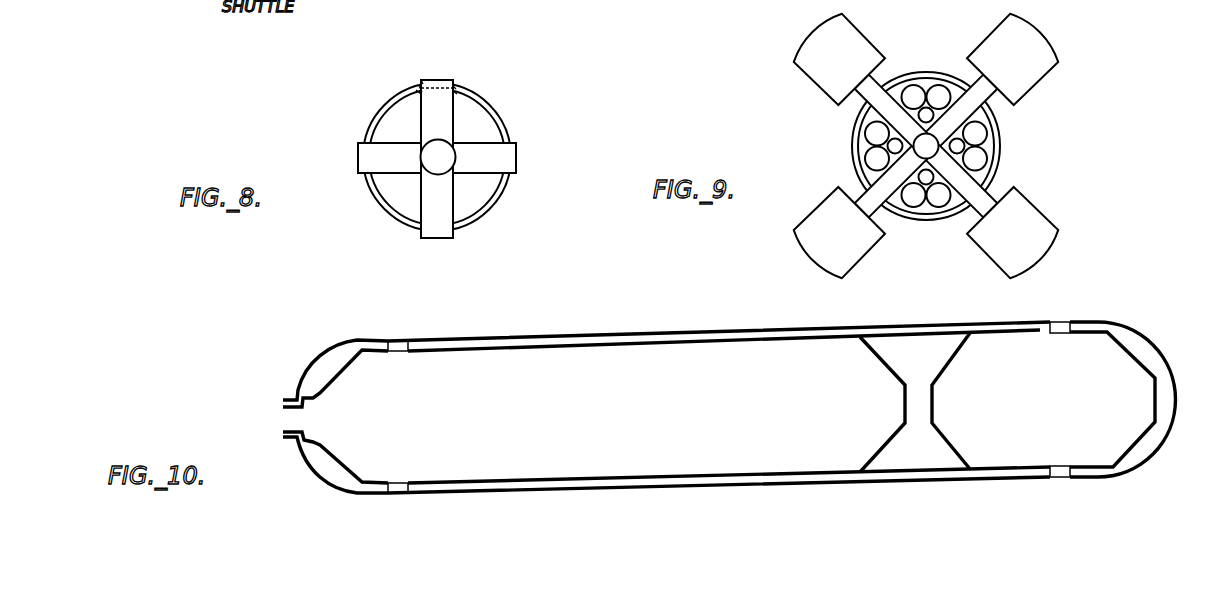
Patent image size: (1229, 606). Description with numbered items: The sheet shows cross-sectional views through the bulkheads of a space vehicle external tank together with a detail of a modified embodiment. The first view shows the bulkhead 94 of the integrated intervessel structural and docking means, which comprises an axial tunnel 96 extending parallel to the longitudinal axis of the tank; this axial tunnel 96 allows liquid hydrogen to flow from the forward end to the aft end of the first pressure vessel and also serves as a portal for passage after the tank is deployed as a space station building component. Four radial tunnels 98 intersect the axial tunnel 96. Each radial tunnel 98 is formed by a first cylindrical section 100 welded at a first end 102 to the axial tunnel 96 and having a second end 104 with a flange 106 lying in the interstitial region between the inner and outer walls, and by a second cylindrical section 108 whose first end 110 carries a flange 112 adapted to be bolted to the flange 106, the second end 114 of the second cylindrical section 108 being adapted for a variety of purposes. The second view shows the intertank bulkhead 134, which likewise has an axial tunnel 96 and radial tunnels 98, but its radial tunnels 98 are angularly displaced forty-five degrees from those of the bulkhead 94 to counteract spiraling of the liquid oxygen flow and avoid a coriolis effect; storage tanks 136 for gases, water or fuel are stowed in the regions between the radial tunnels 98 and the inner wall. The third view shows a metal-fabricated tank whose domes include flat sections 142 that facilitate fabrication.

In FIG. 8, the bulkhead 94 is at (498, 225).
In FIG. 8, the axial tunnel 96 is at (447, 160).
In FIG. 9, the axial tunnel 96 is at (920, 146).
In FIG. 8, the radial tunnel 98 is at (450, 80).
In FIG. 9, the radial tunnel 98 is at (885, 103).
In FIG. 8, the first cylindrical section 100 is at (421, 128).
In FIG. 8, the first end 102 is at (420, 160).
In FIG. 8, the second end 104 is at (455, 92).
In FIG. 8, the flange 106 is at (418, 89).
In FIG. 8, the second cylindrical section 108 is at (453, 87).
In FIG. 8, the first end 110 is at (432, 87).
In FIG. 8, the flange 112 is at (419, 89).
In FIG. 8, the second end 114 is at (423, 80).
In FIG. 9, the intertank bulkhead 134 is at (1038, 105).
In FIG. 9, the storage tanks 136 is at (870, 163).
In FIG. 10, the flat sections 142 is at (335, 457).